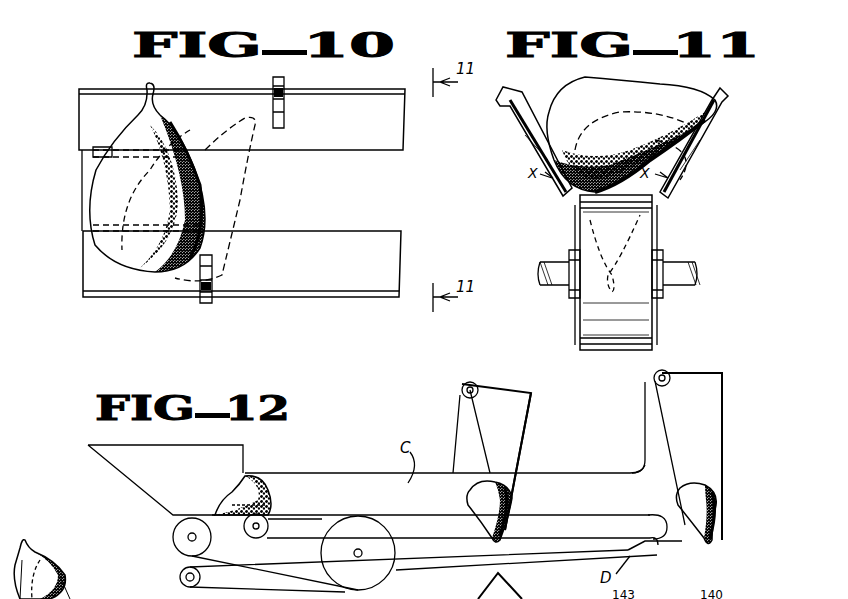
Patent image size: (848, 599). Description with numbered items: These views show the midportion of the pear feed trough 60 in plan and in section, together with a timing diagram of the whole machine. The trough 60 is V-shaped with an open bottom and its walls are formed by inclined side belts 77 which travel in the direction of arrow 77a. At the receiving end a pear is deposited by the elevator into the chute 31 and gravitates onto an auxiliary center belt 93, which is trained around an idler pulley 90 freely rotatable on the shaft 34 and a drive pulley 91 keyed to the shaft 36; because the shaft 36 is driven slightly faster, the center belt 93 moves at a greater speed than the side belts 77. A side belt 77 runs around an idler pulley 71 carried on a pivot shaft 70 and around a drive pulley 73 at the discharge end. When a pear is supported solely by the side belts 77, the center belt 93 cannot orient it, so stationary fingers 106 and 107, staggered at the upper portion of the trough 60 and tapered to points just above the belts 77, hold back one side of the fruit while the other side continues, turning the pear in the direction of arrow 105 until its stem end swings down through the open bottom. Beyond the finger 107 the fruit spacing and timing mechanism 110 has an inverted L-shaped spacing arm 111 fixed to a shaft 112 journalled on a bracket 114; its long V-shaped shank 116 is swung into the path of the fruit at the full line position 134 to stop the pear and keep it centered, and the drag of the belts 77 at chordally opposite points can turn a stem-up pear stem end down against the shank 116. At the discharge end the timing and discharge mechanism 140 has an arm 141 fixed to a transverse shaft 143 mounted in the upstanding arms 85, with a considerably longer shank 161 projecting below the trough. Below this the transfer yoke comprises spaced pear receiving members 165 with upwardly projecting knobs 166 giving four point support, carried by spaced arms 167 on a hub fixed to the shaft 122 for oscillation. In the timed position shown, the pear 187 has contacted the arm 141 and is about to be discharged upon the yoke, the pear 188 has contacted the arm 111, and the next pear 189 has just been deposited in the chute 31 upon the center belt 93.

In FIG. 12, the chute 31 is at (160, 470).
In FIG. 12, the shaft 34 is at (188, 536).
In FIG. 11, the shaft 36 is at (690, 266).
In FIG. 12, the shaft 36 is at (362, 550).
In FIG. 10, the trough 60 is at (360, 205).
In FIG. 11, the trough 60 is at (722, 80).
In FIG. 12, the trough 60 is at (580, 466).
In FIG. 12, the pivot shaft 70 is at (258, 530).
In FIG. 12, the idler pulley 71 is at (252, 530).
In FIG. 12, the drive pulley 73 is at (670, 538).
In FIG. 10, the side belts 77 is at (115, 105).
In FIG. 11, the side belts 77 is at (530, 122).
In FIG. 12, the side belts 77 is at (328, 480).
In FIG. 10, the arrow 77a is at (356, 125).
In FIG. 12, the arrow 77a is at (375, 504).
In FIG. 12, the upstanding arms 85 is at (660, 418).
In FIG. 12, the idler pulley 90 is at (185, 552).
In FIG. 10, the drive pulley 91 is at (92, 152).
In FIG. 11, the drive pulley 91 is at (582, 320).
In FIG. 12, the drive pulley 91 is at (382, 573).
In FIG. 10, the auxiliary center belt 93 is at (95, 186).
In FIG. 11, the auxiliary center belt 93 is at (632, 313).
In FIG. 12, the auxiliary center belt 93 is at (305, 578).
In FIG. 10, the arrow 105 is at (230, 108).
In FIG. 10, the stationary finger 106 is at (212, 278).
In FIG. 11, the stationary finger 106 is at (530, 108).
In FIG. 10, the stationary finger 107 is at (284, 110).
In FIG. 11, the stationary finger 107 is at (712, 118).
In FIG. 12, the fruit spacing and timing mechanism 110 is at (500, 384).
In FIG. 12, the fruit spacing arm 111 is at (525, 425).
In FIG. 12, the shaft 112 is at (465, 385).
In FIG. 12, the upstanding bracket 114 is at (465, 430).
In FIG. 12, the shank 116 is at (505, 510).
In FIG. 12, the shaft 122 is at (180, 578).
In FIG. 12, the full line position of arm 134 is at (518, 502).
In FIG. 12, the timing and discharge mechanism 140 is at (720, 364).
In FIG. 12, the inverted L-shaped arm 141 is at (722, 412).
In FIG. 12, the transverse shaft 143 is at (654, 376).
In FIG. 12, the shank 161 is at (722, 538).
In FIG. 12, the pear receiving and supporting members 165 is at (660, 548).
In FIG. 12, the pear engaging knobs 166 is at (720, 520).
In FIG. 12, the spaced arms 167 is at (468, 566).
In FIG. 12, the pear 187 is at (696, 513).
In FIG. 12, the pear 188 is at (489, 511).
In FIG. 12, the pear 189 is at (258, 502).